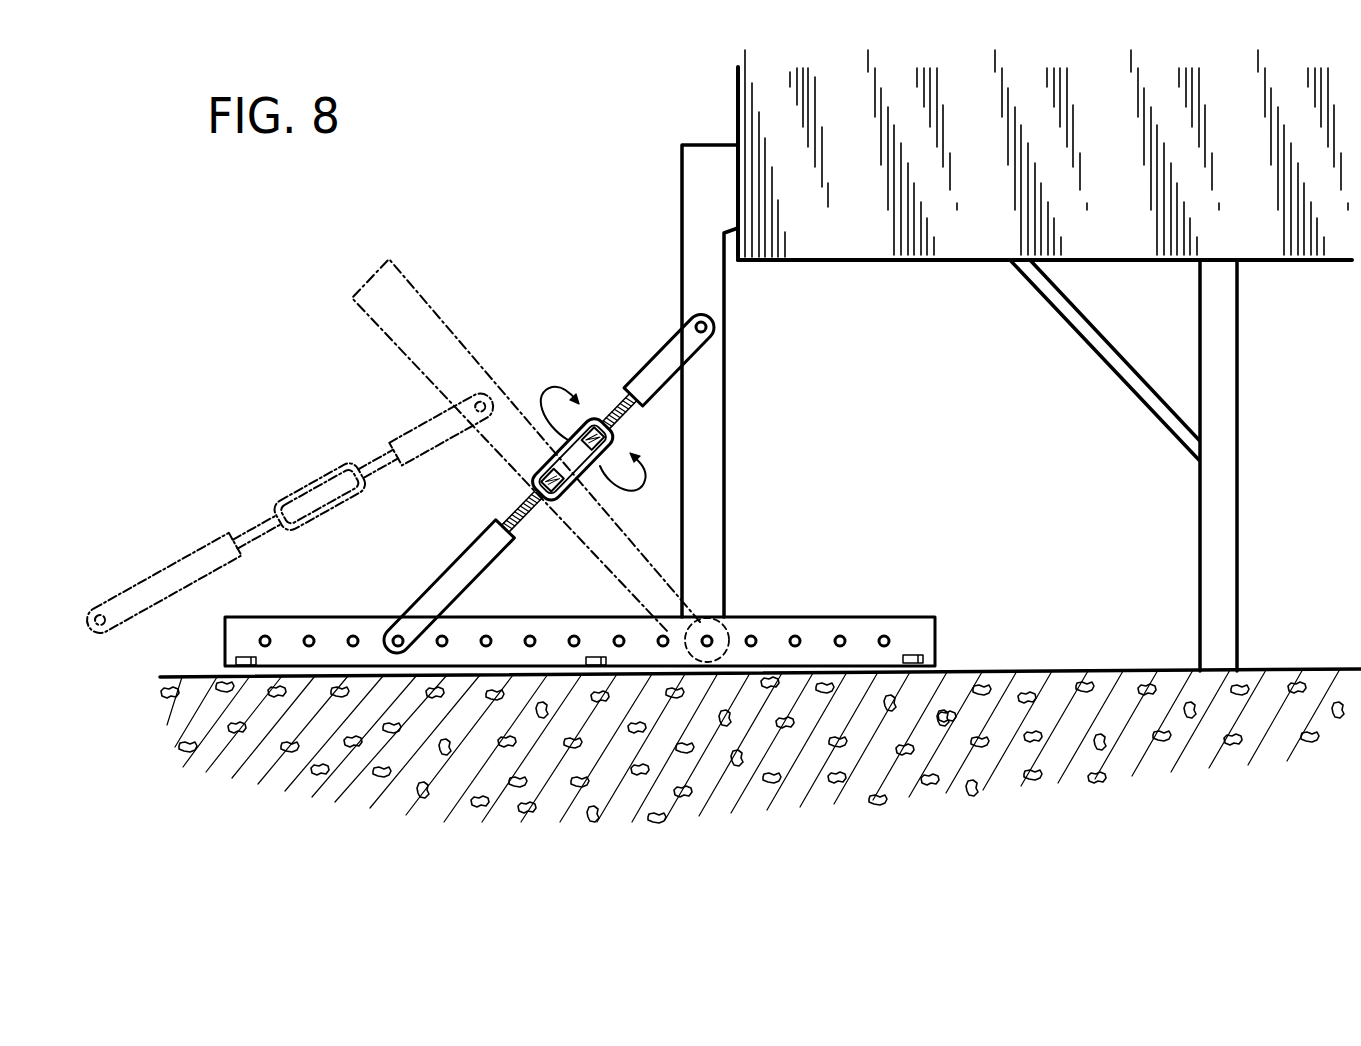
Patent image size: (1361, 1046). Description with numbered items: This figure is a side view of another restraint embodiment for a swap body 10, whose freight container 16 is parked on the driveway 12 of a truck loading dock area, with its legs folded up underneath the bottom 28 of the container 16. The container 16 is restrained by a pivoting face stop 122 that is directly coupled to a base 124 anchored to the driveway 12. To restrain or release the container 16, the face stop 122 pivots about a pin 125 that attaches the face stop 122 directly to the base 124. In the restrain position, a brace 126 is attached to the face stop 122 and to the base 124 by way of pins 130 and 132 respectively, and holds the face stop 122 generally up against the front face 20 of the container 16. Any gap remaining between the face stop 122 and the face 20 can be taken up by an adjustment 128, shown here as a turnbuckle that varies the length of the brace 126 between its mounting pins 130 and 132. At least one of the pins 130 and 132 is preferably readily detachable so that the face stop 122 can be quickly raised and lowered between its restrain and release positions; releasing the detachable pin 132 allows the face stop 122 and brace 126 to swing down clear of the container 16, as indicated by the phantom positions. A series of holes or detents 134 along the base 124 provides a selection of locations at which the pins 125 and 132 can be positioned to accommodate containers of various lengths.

The swap body 10 is at (1317, 322).
The driveway 12 is at (1080, 668).
The container 16 is at (1170, 262).
The front face 20 is at (738, 99).
The bottom 28 is at (918, 262).
The pivoting face stop 122 is at (682, 262).
The base 124 is at (935, 645).
The pin 125 is at (703, 630).
The brace 126 is at (178, 560).
The adjustment 128 is at (589, 416).
The pin 130 is at (713, 316).
The pin 132 is at (404, 615).
The holes or detents 134 is at (518, 633).